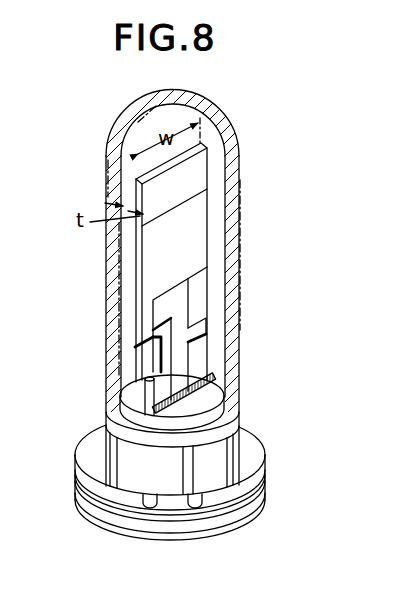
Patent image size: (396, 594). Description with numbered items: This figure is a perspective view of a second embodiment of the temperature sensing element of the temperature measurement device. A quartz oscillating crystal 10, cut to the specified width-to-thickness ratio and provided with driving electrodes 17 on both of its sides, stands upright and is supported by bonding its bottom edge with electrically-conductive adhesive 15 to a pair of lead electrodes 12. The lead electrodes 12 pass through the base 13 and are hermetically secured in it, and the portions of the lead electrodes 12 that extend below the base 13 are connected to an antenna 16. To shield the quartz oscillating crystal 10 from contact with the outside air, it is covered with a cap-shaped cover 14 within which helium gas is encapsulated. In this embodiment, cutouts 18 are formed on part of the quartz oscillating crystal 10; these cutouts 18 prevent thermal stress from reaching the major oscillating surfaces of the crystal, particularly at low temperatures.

The quartz oscillating crystal 10 is at (200, 174).
The lead electrodes 12 is at (130, 398).
The base 13 is at (210, 452).
The cap-shaped cover 14 is at (237, 140).
The electrically-conductive adhesive 15 is at (208, 387).
The antenna 16 is at (252, 502).
The driving electrodes 17 is at (195, 230).
The cutouts 18 is at (200, 322).